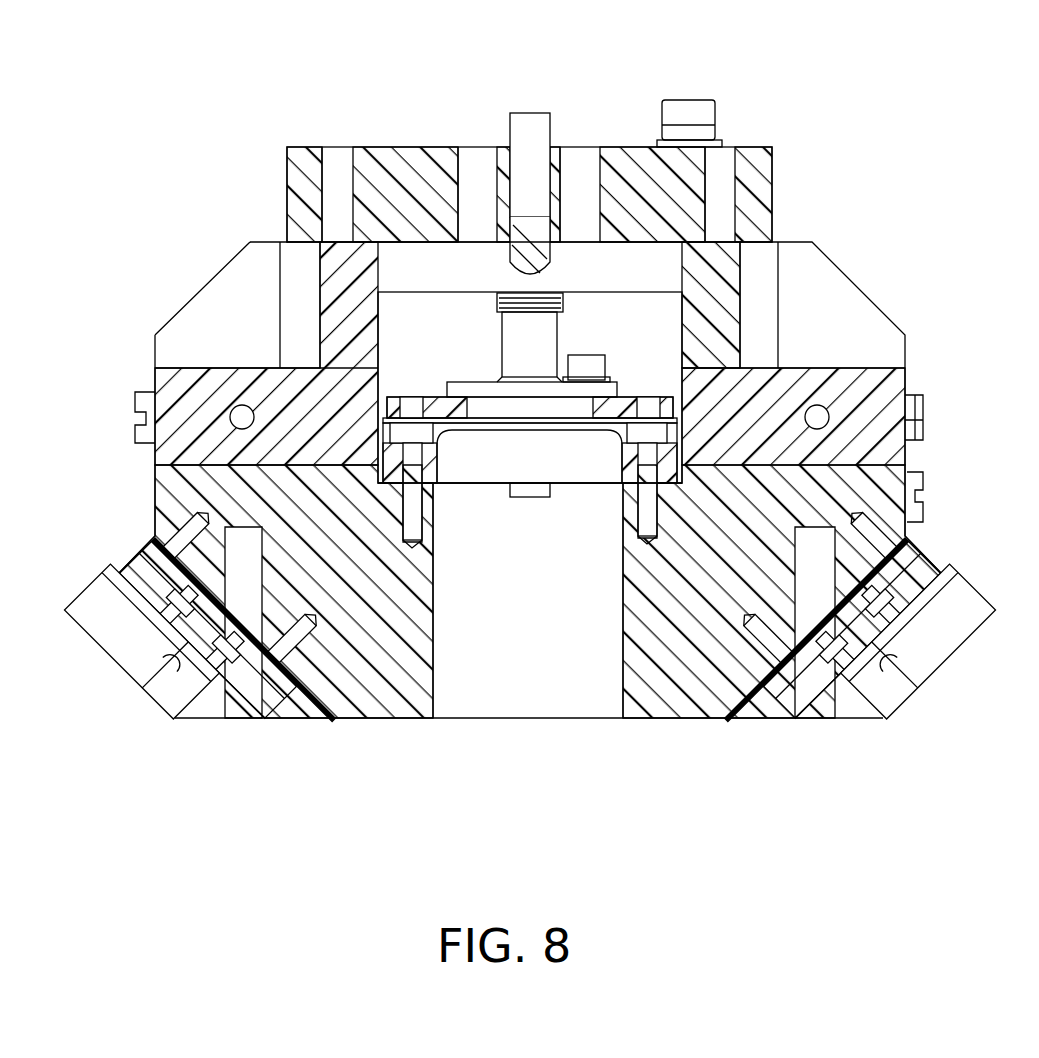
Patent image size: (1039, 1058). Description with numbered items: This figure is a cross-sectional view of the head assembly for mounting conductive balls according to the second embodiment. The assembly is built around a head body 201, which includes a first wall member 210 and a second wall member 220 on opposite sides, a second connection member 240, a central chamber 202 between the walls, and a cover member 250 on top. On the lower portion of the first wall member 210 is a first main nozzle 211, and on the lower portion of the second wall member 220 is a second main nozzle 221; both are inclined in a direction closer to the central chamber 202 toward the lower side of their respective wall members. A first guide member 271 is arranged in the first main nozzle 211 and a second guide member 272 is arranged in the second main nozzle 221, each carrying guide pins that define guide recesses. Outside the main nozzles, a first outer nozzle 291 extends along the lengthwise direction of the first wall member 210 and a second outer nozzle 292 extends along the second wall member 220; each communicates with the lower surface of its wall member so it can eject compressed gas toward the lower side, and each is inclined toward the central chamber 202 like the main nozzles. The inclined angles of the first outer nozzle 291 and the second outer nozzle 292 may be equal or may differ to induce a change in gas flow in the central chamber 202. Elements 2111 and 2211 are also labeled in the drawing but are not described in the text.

The head body 201 is at (813, 138).
The central chamber 202 is at (545, 637).
The first wall member 210 is at (157, 485).
The first main nozzle 211 is at (323, 705).
The first fastening screw 2111 is at (247, 580).
The second wall member 220 is at (922, 452).
The second main nozzle 221 is at (742, 692).
The second fastening screw 2211 is at (822, 582).
The second connection member 240 is at (497, 690).
The cover member 250 is at (390, 443).
The first guide member 271 is at (308, 692).
The second guide member 272 is at (742, 695).
The first outer nozzle 291 is at (250, 702).
The second outer nozzle 292 is at (800, 710).